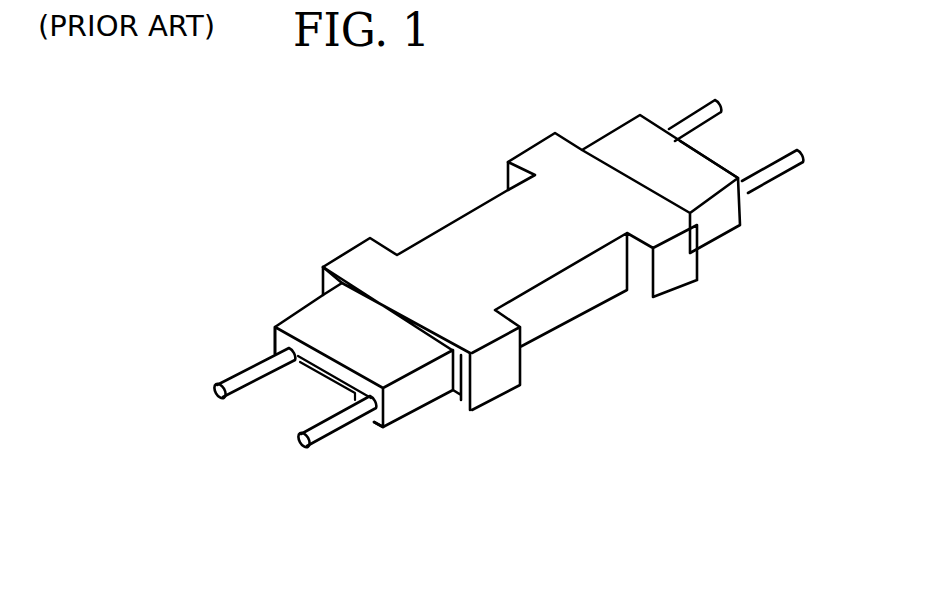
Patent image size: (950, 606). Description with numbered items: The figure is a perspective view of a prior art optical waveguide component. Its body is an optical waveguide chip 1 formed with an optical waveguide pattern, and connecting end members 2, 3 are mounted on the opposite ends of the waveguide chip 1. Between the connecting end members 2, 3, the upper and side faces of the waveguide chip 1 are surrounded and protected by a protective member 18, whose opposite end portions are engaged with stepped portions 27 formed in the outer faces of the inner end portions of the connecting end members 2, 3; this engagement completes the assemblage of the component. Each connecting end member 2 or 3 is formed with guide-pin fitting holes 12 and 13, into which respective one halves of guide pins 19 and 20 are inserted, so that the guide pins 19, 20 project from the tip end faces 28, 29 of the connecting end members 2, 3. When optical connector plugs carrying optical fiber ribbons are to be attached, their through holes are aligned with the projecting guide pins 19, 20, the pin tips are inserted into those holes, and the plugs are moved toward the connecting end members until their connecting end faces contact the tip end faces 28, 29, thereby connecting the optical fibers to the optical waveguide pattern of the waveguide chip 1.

The optical waveguide chip 1 is at (592, 290).
The connecting end member 2 is at (312, 312).
The connecting end member 3 is at (627, 128).
The guide-pin fitting hole 12 is at (374, 426).
The guide-pin fitting hole 13 is at (273, 350).
The protective member 18 is at (474, 211).
The guide pin 19 is at (230, 386).
The guide pin 20 is at (323, 442).
The stepped portion 27 is at (572, 143).
The tip end face 28 is at (298, 368).
The tip end face 29 is at (703, 150).